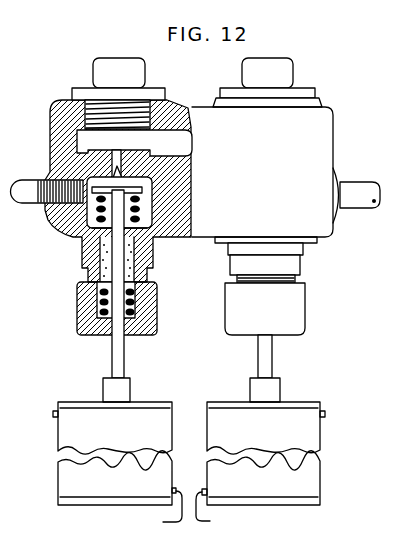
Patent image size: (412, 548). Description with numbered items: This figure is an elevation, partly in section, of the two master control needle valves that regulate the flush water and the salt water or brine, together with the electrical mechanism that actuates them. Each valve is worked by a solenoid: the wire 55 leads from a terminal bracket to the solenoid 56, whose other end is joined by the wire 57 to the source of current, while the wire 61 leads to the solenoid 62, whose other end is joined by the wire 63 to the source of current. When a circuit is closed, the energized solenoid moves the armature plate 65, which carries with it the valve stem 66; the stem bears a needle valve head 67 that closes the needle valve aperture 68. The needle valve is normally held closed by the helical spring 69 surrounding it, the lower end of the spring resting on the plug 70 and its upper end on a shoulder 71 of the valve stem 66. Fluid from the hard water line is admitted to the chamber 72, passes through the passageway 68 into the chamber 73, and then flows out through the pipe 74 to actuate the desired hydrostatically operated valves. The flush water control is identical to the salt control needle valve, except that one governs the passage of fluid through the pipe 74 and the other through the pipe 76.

The wire 55 is at (165, 523).
The solenoid 56 is at (60, 477).
The wire 57 is at (53, 413).
The wire 61 is at (214, 511).
The solenoid 62 is at (318, 475).
The wire 63 is at (325, 413).
The armature plate 65 is at (103, 390).
The valve stem 66 is at (112, 350).
The needle valve head 67 is at (111, 163).
The needle valve aperture 68 is at (122, 168).
The helical spring 69 is at (158, 228).
The plug 70 is at (83, 255).
The shoulder 71 is at (147, 200).
The chamber 72 is at (177, 132).
The chamber 73 is at (92, 189).
The pipe 74 is at (38, 180).
The pipe 76 is at (368, 183).